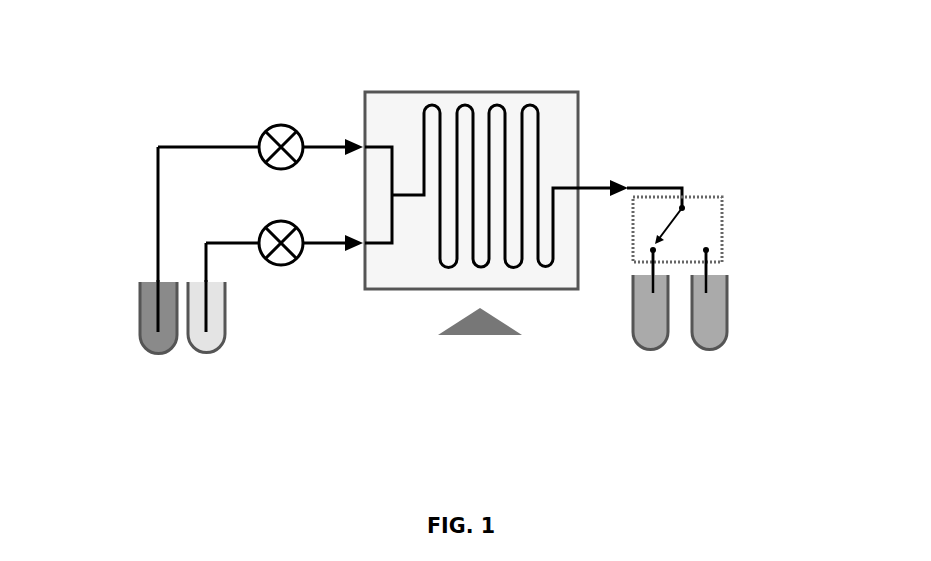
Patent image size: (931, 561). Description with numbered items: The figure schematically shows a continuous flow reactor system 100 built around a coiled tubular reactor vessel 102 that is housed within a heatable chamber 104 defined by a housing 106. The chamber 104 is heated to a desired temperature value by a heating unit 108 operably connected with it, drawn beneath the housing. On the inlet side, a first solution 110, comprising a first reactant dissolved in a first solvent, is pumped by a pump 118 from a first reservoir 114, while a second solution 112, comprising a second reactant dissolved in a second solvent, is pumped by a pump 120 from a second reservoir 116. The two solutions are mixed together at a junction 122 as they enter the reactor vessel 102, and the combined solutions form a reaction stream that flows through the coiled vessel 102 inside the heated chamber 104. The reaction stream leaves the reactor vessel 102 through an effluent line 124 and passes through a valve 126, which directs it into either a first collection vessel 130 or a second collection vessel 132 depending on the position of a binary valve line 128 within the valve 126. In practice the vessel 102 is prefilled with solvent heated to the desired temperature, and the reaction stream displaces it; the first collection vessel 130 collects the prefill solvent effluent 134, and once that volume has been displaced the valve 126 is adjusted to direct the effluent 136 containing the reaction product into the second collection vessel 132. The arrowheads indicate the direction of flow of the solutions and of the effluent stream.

The continuous flow reactor system 100 is at (673, 78).
The reactor vessel 102 is at (463, 107).
The heatable chamber 104 is at (567, 130).
The housing 106 is at (390, 92).
The heating unit 108 is at (457, 323).
The first solution 110 is at (153, 313).
The second solution 112 is at (220, 313).
The first reservoir 114 is at (170, 355).
The second reservoir 116 is at (222, 350).
The pump 118 is at (288, 125).
The pump 120 is at (280, 265).
The junction 122 is at (393, 197).
The effluent line 124 is at (653, 186).
The valve 126 is at (722, 227).
The binary valve line 128 is at (668, 230).
The first collection vessel 130 is at (658, 347).
The second collection vessel 132 is at (720, 347).
The prefill solvent effluent 134 is at (648, 313).
The effluent 136 is at (707, 313).